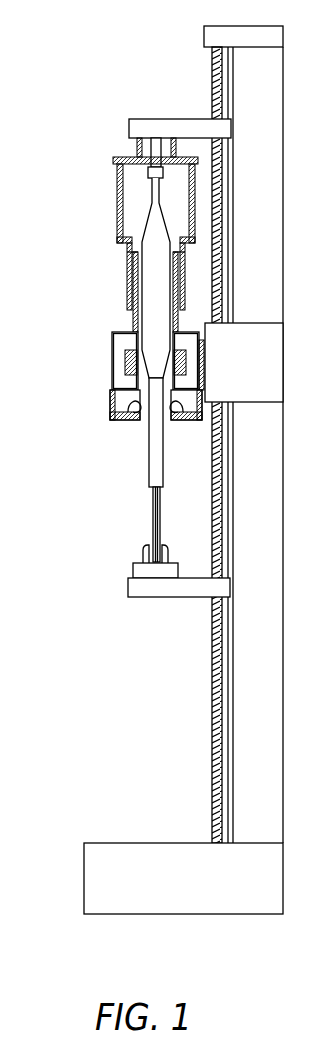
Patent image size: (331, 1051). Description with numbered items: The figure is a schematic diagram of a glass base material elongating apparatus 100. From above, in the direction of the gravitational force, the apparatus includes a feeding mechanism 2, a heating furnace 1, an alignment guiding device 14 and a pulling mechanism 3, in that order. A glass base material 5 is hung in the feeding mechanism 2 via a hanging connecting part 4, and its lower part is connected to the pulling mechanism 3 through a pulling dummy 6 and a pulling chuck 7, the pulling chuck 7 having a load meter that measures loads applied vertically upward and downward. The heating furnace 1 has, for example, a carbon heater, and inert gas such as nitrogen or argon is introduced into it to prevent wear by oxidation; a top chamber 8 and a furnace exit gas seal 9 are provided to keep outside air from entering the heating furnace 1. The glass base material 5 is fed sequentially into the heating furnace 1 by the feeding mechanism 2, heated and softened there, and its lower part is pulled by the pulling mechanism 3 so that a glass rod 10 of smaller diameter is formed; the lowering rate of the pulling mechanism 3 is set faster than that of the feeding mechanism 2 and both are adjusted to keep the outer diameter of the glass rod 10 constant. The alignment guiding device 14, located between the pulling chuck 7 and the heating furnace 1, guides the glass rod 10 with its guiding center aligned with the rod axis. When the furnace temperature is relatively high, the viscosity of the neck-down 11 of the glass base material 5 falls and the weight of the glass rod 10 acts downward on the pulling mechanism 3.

The elongating apparatus 100 is at (61, 48).
The heating furnace 1 is at (112, 365).
The feeding mechanism 2 is at (129, 129).
The pulling mechanism 3 is at (128, 592).
The hanging connecting part 4 is at (148, 172).
The glass base material 5 is at (127, 248).
The pulling dummy 6 is at (153, 515).
The pulling chuck 7 is at (143, 555).
The top chamber 8 is at (118, 200).
The furnace exit gas seal 9 is at (110, 404).
The glass rod 10 is at (149, 462).
The neck-down 11 is at (155, 347).
The alignment guiding device 14 is at (92, 411).